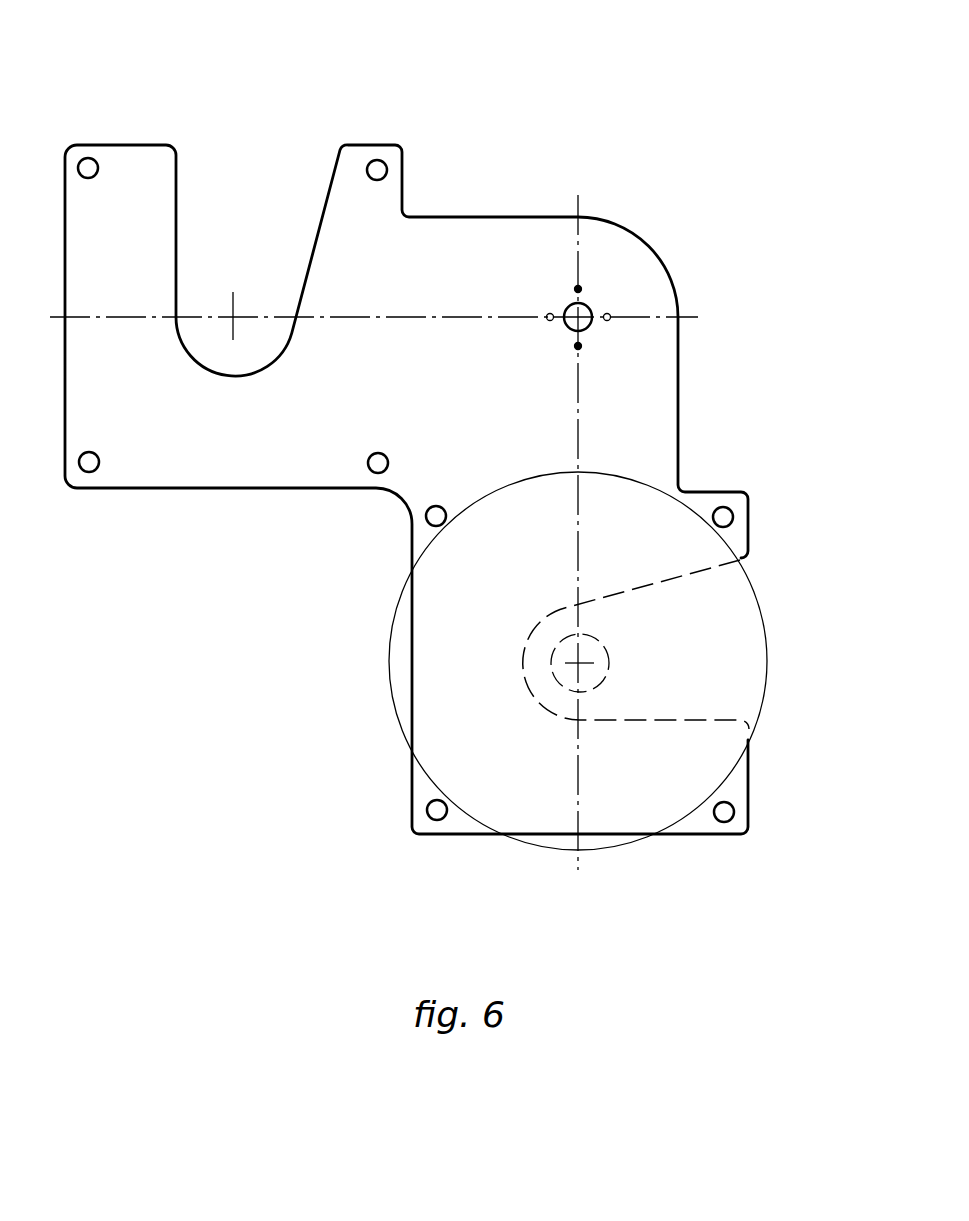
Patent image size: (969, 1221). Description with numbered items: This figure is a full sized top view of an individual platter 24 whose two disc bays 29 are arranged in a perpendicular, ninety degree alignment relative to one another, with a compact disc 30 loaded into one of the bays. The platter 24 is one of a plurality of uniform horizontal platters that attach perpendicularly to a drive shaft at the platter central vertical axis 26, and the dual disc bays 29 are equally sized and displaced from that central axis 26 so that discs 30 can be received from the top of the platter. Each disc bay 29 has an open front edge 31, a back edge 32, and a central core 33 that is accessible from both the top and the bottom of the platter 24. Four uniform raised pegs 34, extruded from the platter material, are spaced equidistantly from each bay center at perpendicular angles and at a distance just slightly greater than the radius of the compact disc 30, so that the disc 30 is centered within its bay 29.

The platter 24 is at (244, 463).
The central vertical axis 26 is at (590, 311).
The disc bay 29 is at (312, 237).
The compact disc 30 is at (735, 683).
The front edge 31 is at (118, 145).
The back edge 32 is at (125, 488).
The central core 33 is at (203, 360).
The raised pegs 34 is at (428, 521).